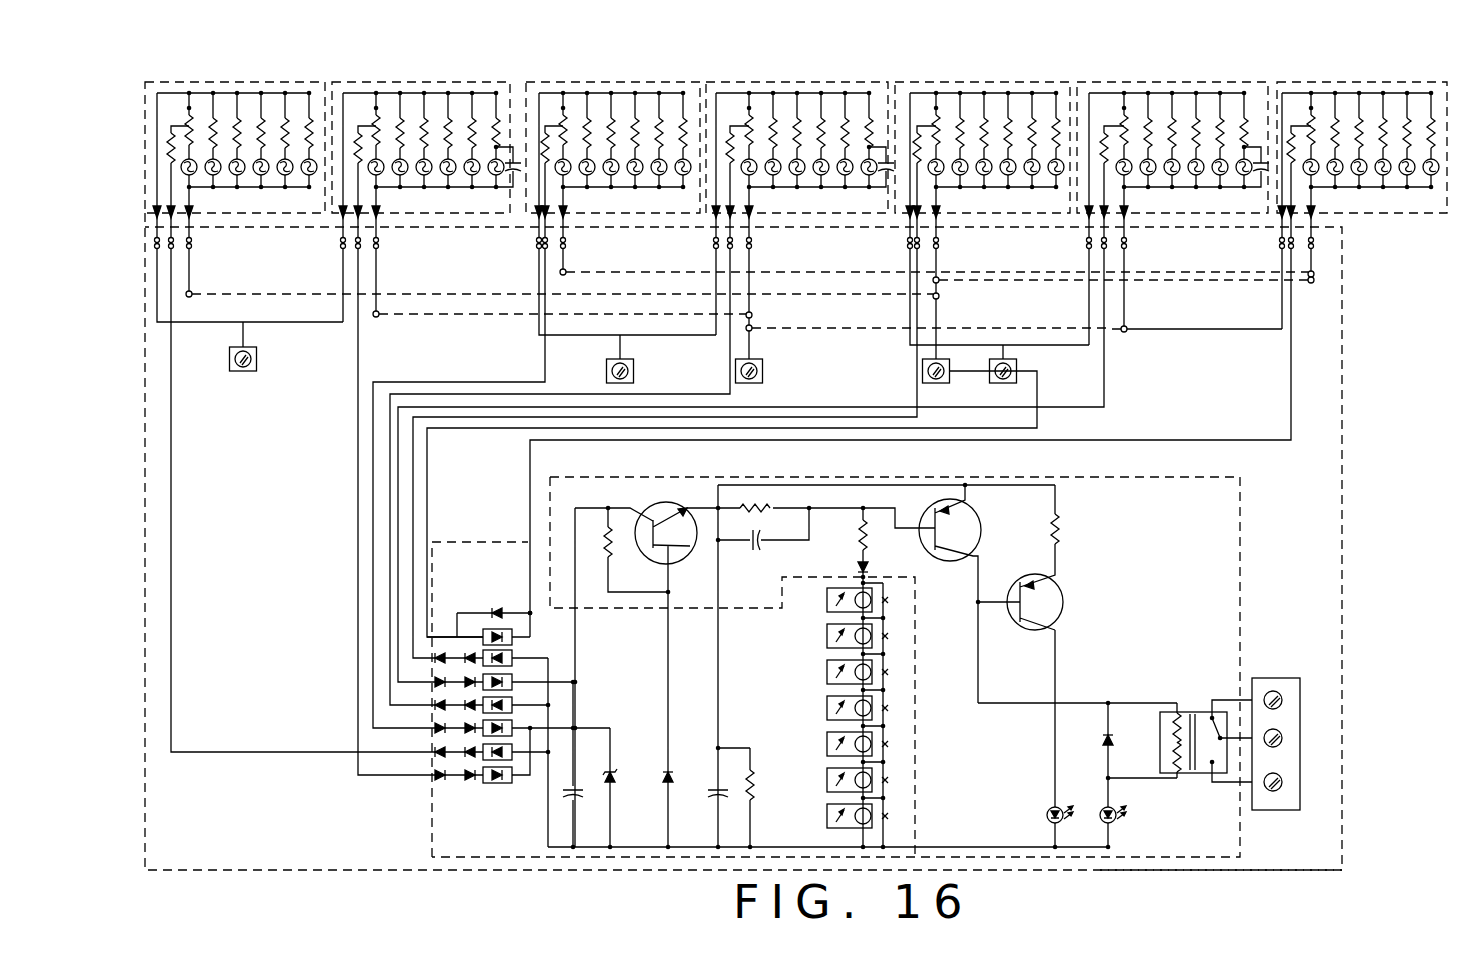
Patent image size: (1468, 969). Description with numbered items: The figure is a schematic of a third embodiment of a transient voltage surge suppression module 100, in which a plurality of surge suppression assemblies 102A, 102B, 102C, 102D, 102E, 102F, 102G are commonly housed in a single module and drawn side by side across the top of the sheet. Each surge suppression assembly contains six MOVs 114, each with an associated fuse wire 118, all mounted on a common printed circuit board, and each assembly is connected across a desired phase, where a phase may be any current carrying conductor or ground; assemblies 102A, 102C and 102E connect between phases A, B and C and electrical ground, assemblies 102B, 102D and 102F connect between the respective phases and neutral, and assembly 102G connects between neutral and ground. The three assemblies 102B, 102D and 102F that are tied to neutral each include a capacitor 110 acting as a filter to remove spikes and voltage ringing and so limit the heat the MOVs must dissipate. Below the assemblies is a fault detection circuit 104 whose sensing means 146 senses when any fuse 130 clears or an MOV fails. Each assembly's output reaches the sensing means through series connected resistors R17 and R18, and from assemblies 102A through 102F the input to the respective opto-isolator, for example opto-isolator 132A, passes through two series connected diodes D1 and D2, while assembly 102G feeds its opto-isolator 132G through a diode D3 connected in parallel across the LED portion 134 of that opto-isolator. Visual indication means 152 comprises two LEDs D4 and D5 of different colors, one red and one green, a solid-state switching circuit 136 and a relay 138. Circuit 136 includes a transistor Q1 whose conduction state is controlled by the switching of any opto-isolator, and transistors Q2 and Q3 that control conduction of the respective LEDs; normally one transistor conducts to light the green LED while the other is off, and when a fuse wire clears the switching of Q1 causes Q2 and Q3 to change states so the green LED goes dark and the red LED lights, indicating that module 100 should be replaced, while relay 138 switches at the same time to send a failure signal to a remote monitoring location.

The TVSS module 100 is at (856, 66).
The surge suppression assembly 102A is at (291, 68).
The surge suppression assembly 102B is at (476, 68).
The surge suppression assembly 102C is at (668, 68).
The surge suppression assembly 102D is at (844, 68).
The surge suppression assembly 102E is at (1021, 68).
The surge suppression assembly 102F is at (1216, 68).
The surge suppression assembly 102G is at (1428, 68).
The fault detection circuit 104 is at (1120, 882).
The capacitor 110 is at (513, 176).
The MOV 114 is at (309, 176).
The fuse wire 118 is at (186, 130).
The fuse 130 is at (193, 117).
The opto-isolator 132A is at (512, 784).
The opto-isolator 132G is at (443, 615).
The LED portion of opto-isolator 134 is at (512, 656).
The solid-state switching circuit 136 is at (1255, 553).
The relay 138 is at (1197, 712).
The sensing means 146 is at (546, 875).
The visual indication means 152 is at (1272, 833).
The resistor R17 is at (173, 178).
The resistor R18 is at (190, 186).
The diode D1 is at (438, 662).
The diode D2 is at (468, 652).
The diode D3 is at (505, 617).
The LED D4 is at (1142, 775).
The LED D5 is at (1027, 738).
The transistor Q1 is at (684, 503).
The transistor Q2 is at (978, 512).
The transistor Q3 is at (1063, 594).